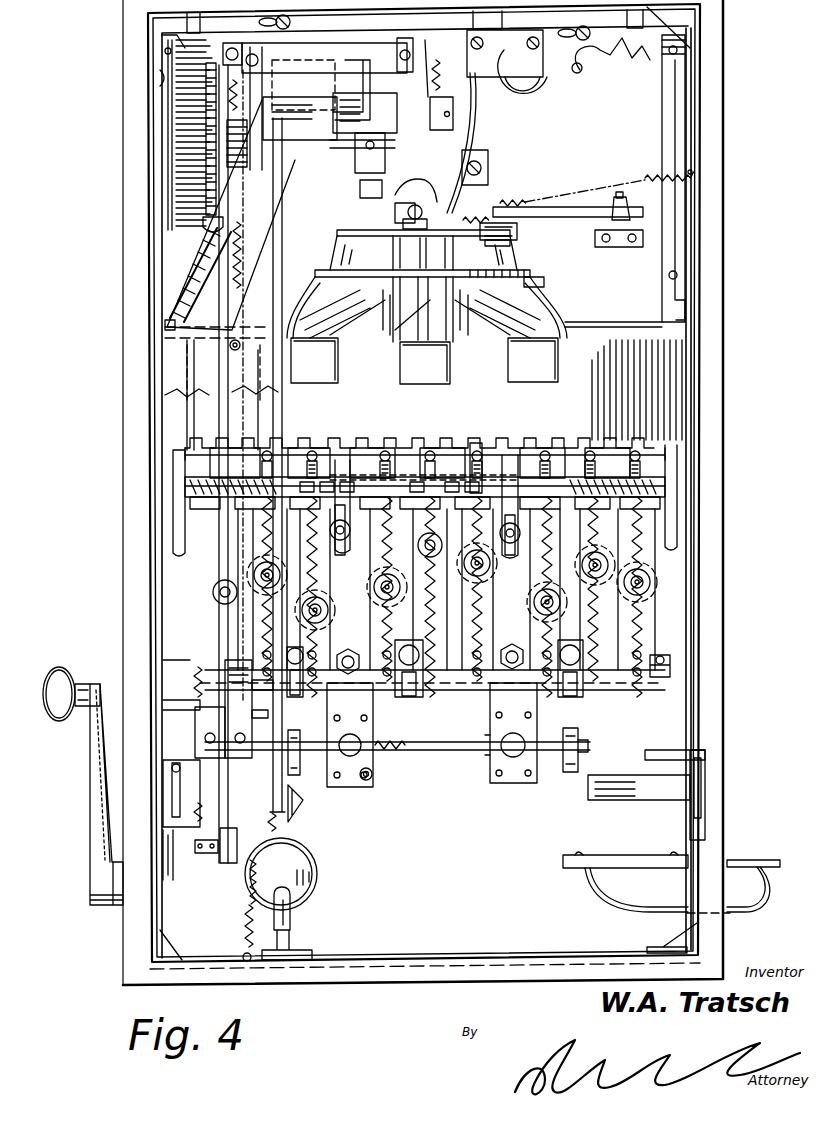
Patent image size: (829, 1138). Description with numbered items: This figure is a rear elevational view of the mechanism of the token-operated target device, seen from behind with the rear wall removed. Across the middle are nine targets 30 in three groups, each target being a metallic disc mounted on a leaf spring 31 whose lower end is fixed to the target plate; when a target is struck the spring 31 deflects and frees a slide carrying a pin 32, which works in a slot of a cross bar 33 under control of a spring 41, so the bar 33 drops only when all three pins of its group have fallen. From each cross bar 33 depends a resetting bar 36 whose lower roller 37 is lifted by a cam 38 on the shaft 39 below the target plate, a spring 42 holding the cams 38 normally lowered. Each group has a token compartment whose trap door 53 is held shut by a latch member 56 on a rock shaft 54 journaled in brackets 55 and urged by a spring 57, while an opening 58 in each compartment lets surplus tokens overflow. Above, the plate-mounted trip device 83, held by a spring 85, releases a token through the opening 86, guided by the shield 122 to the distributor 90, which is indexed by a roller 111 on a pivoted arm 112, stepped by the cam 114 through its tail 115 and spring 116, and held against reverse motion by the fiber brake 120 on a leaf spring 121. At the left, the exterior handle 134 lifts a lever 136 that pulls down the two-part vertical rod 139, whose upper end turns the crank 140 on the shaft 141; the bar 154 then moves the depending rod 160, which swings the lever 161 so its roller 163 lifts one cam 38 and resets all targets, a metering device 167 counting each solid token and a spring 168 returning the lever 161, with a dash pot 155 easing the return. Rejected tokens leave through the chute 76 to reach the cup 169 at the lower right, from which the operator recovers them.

The crank 140 is at (207, 100).
The vertical rod 139 is at (226, 180).
The depending rod 160 is at (283, 225).
The bar 154 is at (298, 100).
The shaft 141 is at (300, 152).
The trip device 83 is at (430, 78).
The spring 85 is at (434, 106).
The shield 122 is at (470, 135).
The opening 86 is at (476, 152).
The cam 114 is at (420, 198).
The tail 115 is at (465, 212).
The spring 116 is at (545, 196).
The roller 111 is at (518, 228).
The pivoted arm 112 is at (562, 226).
The distributor 90 is at (505, 258).
The brake 120 is at (532, 275).
The leaf spring 121 is at (545, 283).
The opening 58 is at (342, 358).
The chute 76 is at (193, 380).
The trap door 53 is at (185, 452).
The spring 57 is at (247, 480).
The cross bar 33 is at (300, 446).
The pin 32 is at (318, 452).
The latch member 56 is at (420, 445).
The rock shaft 54 is at (360, 476).
The leaf spring 31 is at (225, 545).
The spring 41 is at (385, 535).
The bracket 55 is at (498, 552).
The resetting bar 36 is at (405, 565).
The target 30 is at (330, 615).
The roller 37 is at (418, 698).
The cam 38 is at (292, 730).
The shaft 39 is at (448, 748).
The spring 42 is at (378, 778).
The metering device 167 is at (252, 695).
The lever 161 is at (272, 786).
The lever 136 is at (226, 838).
The roller 163 is at (298, 815).
The dash pot 155 is at (310, 880).
The spring 168 is at (248, 915).
The cup 169 is at (625, 908).
The handle 134 is at (90, 776).